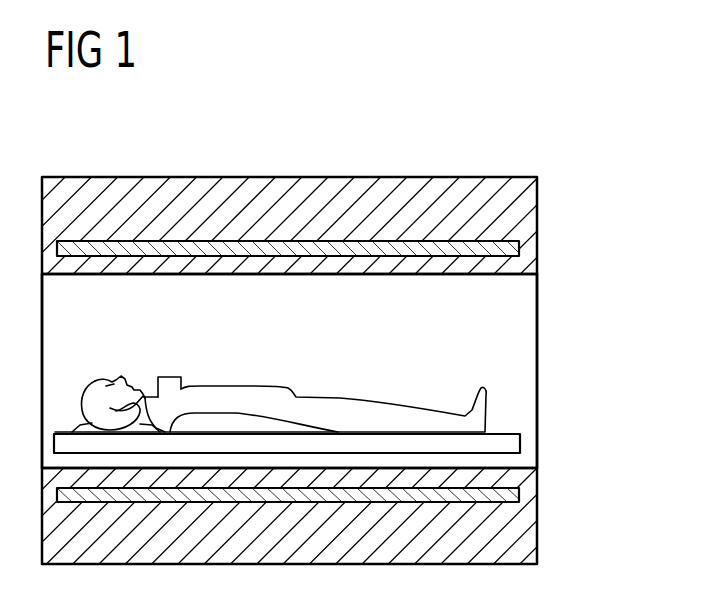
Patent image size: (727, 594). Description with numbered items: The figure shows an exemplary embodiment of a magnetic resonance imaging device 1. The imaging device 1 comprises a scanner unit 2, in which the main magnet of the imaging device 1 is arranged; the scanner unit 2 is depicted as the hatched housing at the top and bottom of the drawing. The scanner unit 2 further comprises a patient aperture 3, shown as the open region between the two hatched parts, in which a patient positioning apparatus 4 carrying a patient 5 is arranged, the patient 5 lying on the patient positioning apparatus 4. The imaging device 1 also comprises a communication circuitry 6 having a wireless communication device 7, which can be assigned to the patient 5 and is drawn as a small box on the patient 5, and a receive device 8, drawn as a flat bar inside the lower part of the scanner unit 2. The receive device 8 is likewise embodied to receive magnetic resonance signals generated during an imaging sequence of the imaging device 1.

The magnetic resonance imaging device 1 is at (466, 128).
The scanner unit 2 is at (341, 190).
The patient aperture 3 is at (505, 332).
The patient positioning apparatus 4 is at (507, 443).
The patient 5 is at (384, 416).
The communication circuitry 6 is at (335, 403).
The wireless communication device 7 is at (168, 377).
The receive device 8 is at (505, 495).